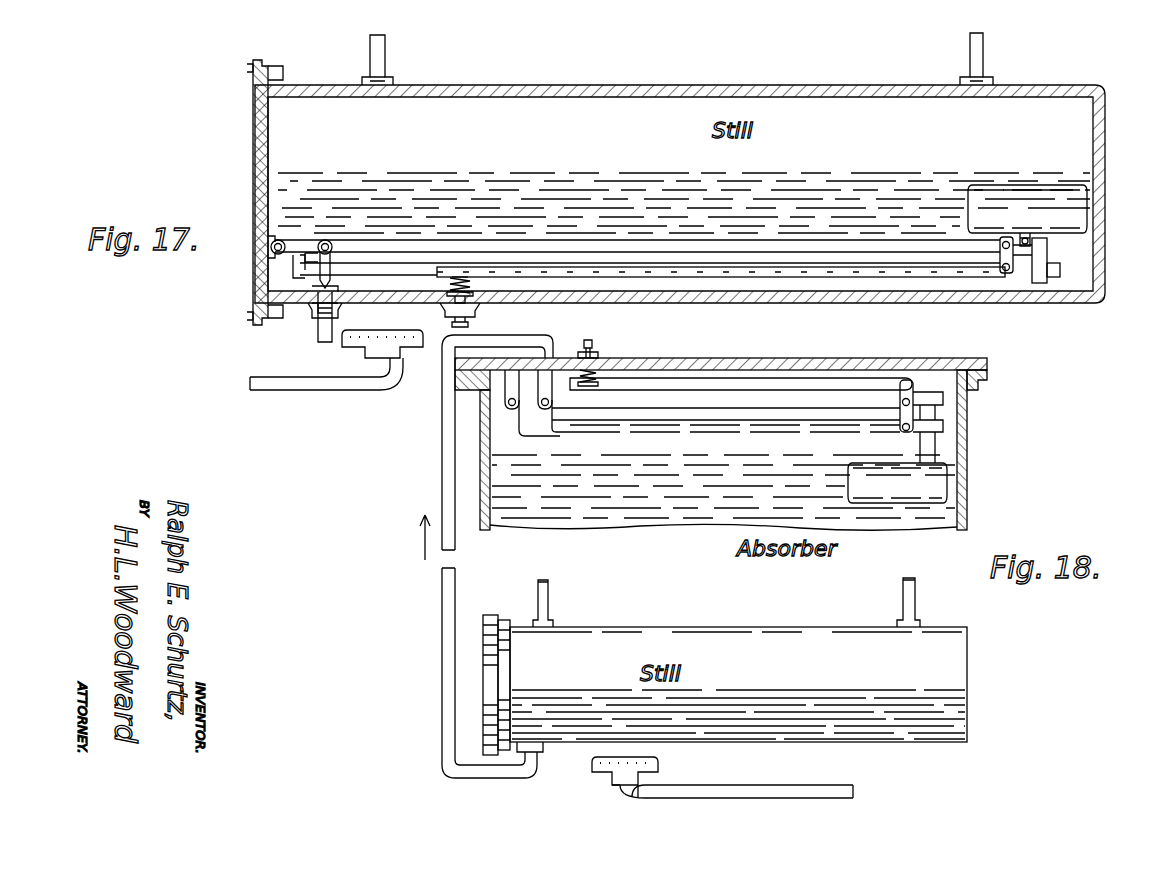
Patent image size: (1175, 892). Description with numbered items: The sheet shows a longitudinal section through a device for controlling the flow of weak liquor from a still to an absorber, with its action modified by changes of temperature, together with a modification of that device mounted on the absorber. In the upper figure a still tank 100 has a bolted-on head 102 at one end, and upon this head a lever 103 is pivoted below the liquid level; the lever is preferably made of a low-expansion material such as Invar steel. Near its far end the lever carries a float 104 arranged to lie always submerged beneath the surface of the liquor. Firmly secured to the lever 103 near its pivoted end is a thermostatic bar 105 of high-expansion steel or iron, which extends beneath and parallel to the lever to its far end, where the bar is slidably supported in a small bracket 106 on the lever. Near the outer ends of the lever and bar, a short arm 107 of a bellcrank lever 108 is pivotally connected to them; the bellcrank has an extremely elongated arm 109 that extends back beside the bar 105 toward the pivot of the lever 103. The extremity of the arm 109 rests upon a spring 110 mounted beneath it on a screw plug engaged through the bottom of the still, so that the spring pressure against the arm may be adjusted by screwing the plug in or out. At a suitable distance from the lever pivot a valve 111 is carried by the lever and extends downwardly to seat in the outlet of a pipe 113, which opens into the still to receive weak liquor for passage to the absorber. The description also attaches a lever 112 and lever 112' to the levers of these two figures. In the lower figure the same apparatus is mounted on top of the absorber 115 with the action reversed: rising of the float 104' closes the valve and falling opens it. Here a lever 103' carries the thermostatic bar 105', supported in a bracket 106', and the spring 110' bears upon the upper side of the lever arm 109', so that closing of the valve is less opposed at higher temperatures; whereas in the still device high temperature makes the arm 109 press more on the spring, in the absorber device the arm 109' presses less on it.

In FIG. 17, the still tank 100 is at (626, 85).
In FIG. 17, the bolted-on head 102 is at (262, 148).
In FIG. 17, the lever 103 is at (634, 234).
In FIG. 17, the float 104 is at (1027, 209).
In FIG. 17, the thermostatic bar 105 is at (646, 249).
In FIG. 17, the bracket 106 is at (1092, 260).
In FIG. 17, the short arm 107 is at (1010, 255).
In FIG. 17, the bellcrank lever 108 is at (797, 277).
In FIG. 17, the elongated arm 109 is at (718, 300).
In FIG. 17, the spring 110 is at (512, 299).
In FIG. 17, the valve 111 is at (470, 322).
In FIG. 17, the lever 112 is at (343, 250).
In FIG. 17, the pipe 113 is at (320, 325).
In FIG. 18, the absorber 115 is at (632, 515).
In FIG. 18, the spring 110' is at (616, 362).
In FIG. 18, the elongated arm 109' is at (741, 364).
In FIG. 18, the lever 112' is at (532, 413).
In FIG. 18, the lever 103' is at (726, 428).
In FIG. 18, the thermostatic bar 105' is at (735, 440).
In FIG. 18, the bracket 106' is at (962, 421).
In FIG. 18, the float 104' is at (897, 483).